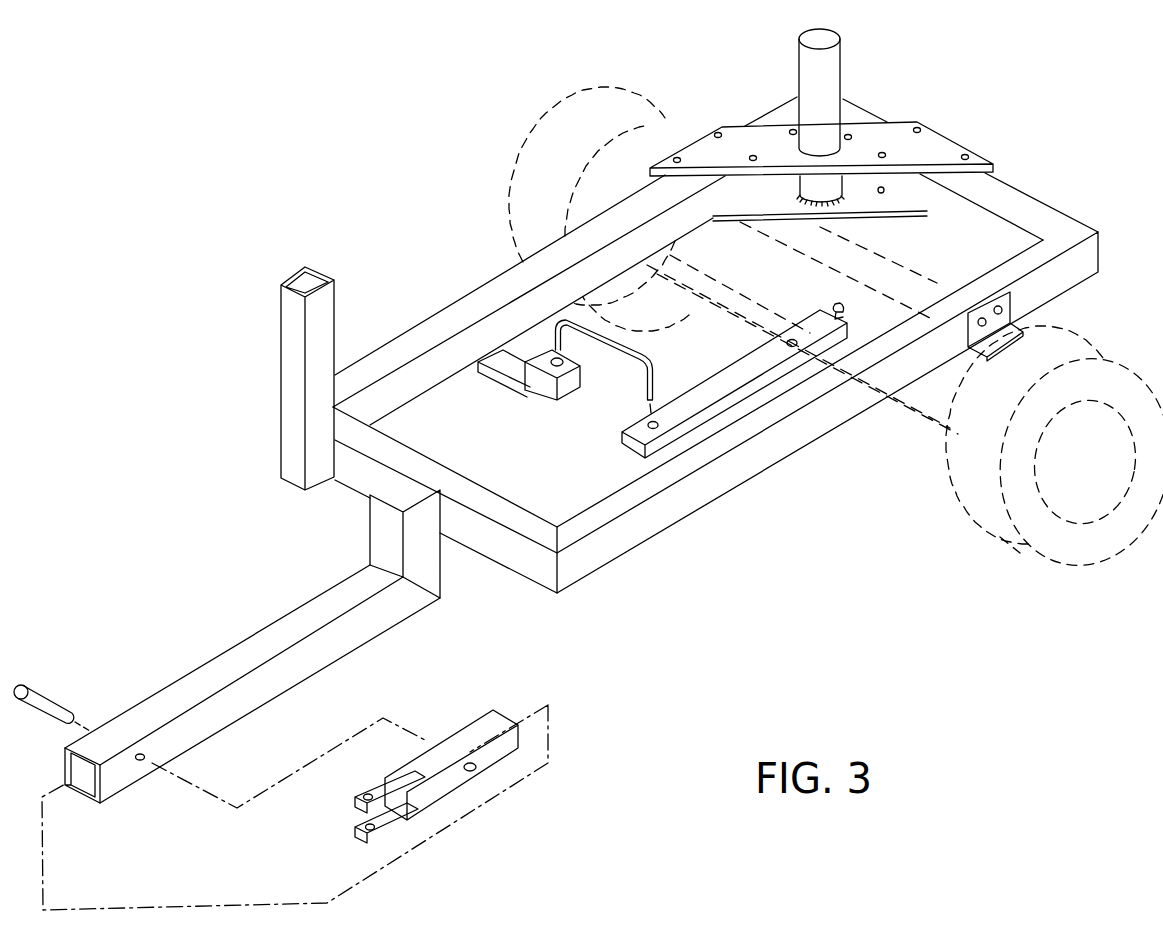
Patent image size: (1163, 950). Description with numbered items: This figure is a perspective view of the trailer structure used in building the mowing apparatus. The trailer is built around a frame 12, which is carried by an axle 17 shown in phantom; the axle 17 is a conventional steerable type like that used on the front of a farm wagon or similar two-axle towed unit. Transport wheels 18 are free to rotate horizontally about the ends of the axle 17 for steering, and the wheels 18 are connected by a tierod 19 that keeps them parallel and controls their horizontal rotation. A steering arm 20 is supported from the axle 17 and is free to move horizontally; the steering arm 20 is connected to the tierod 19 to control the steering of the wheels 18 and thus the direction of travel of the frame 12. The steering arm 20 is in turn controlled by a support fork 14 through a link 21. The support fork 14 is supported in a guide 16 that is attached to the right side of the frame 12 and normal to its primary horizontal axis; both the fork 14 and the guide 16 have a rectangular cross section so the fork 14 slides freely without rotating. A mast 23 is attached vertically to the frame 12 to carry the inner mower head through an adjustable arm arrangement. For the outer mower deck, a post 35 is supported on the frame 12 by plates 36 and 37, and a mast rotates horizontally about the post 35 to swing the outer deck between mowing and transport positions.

The frame 12 is at (512, 272).
The support fork 14 is at (566, 394).
The guide 16 is at (505, 375).
The axle 17 is at (905, 249).
The transport wheels 18 is at (618, 148).
The tierod 19 is at (750, 325).
The steering arm 20 is at (635, 450).
The link 21 is at (628, 348).
The mast 23 is at (279, 379).
The post 35 is at (853, 58).
The plate 36 is at (960, 120).
The plate 37 is at (850, 195).